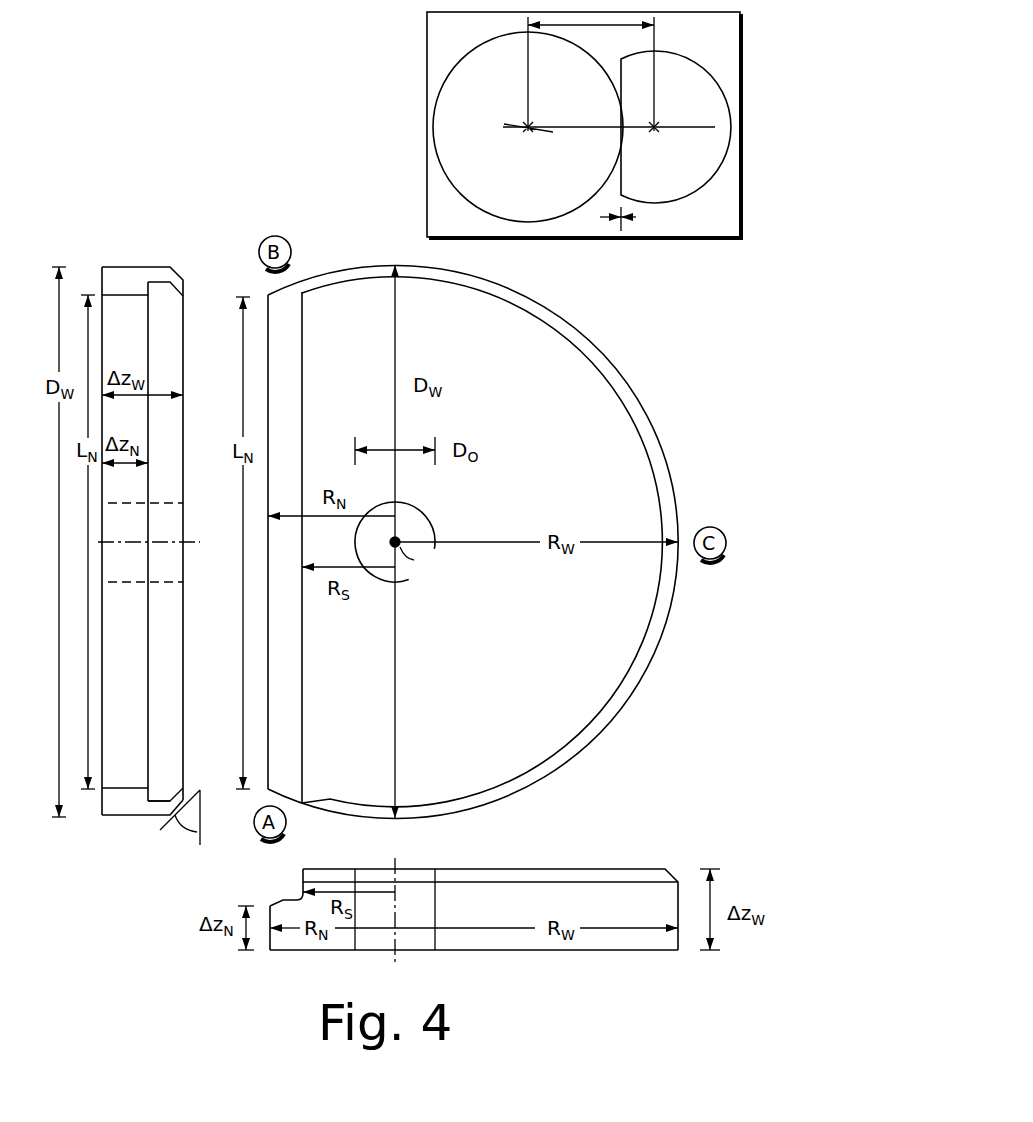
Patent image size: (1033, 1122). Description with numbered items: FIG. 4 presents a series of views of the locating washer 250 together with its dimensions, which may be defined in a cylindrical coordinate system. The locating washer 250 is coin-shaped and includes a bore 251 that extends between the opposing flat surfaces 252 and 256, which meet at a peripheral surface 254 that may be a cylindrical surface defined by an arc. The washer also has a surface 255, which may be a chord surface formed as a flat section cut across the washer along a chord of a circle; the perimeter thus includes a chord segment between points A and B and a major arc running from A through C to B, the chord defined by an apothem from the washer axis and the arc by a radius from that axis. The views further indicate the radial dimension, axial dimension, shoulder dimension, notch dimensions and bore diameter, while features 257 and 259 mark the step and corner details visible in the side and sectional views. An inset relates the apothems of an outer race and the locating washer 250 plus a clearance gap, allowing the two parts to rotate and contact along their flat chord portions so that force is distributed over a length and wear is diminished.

The locating washer 250 is at (689, 183).
The bore 251 is at (431, 525).
The flat surface 252 is at (516, 626).
The peripheral surface 254 is at (652, 428).
The chord surface 255 is at (268, 778).
The flat surface 256 is at (101, 266).
The step surface 257 is at (302, 738).
The fillet 259 is at (280, 716).